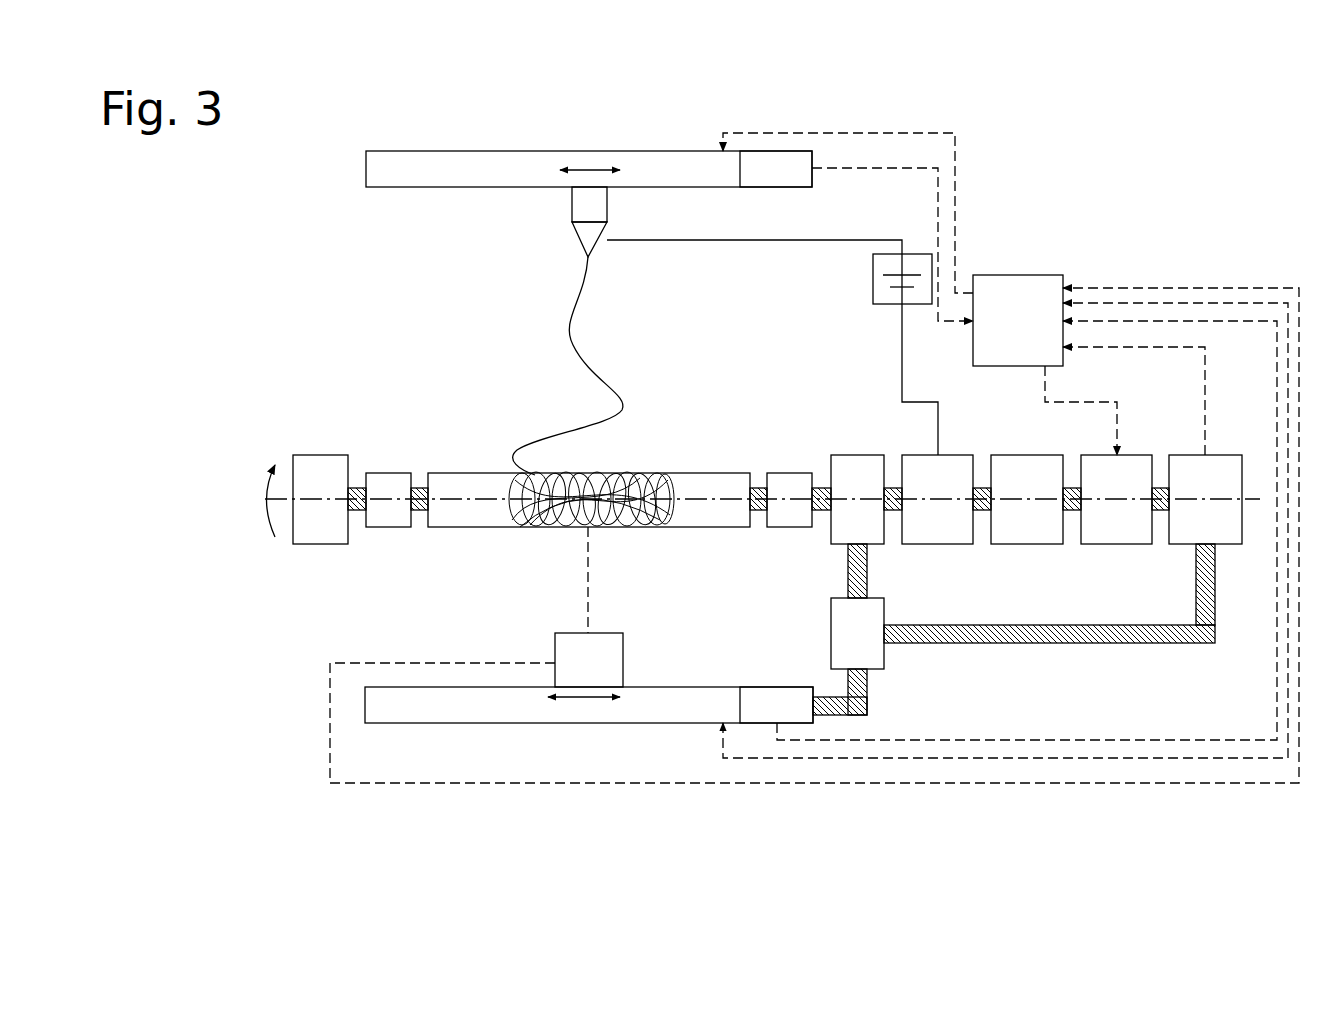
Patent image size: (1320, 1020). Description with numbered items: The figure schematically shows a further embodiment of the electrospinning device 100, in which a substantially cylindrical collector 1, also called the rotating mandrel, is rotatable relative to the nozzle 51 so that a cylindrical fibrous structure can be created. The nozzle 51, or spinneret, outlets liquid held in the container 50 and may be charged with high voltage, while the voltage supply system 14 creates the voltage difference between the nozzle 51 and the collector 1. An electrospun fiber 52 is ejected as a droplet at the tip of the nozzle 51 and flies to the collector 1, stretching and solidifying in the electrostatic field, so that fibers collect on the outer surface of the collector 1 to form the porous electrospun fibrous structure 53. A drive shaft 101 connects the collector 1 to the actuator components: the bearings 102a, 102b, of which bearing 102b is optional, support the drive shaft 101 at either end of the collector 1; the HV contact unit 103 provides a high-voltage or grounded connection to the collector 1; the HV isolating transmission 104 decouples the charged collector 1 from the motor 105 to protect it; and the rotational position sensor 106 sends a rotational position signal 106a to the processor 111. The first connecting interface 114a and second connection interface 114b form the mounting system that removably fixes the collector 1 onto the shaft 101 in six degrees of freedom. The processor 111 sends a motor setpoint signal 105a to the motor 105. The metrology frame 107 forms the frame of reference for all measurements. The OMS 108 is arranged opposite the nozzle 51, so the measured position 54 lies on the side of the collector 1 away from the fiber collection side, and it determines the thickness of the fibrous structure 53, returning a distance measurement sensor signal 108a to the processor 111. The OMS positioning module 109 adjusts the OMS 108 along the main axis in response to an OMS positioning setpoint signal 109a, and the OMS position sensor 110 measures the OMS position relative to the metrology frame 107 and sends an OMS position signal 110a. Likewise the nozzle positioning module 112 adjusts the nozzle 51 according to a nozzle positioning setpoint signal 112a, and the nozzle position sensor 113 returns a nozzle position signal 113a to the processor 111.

The collector 1 is at (690, 480).
The voltage supply system 14 is at (880, 293).
The container 50 is at (580, 198).
The nozzle 51 is at (585, 230).
The electrospun fiber 52 is at (570, 340).
The electrospun fibrous structure 53 is at (522, 515).
The measured position 54 is at (595, 522).
The electrospinning device 100 is at (1062, 236).
The drive shaft 101 is at (820, 512).
The bearing 102a is at (848, 455).
The bearing 102b is at (305, 465).
The HV contact unit 103 is at (946, 532).
The HV isolating transmission 104 is at (1025, 532).
The motor 105 is at (1128, 462).
The rotational position sensor 106 is at (1180, 535).
The metrology frame 107 is at (870, 661).
The OMS 108 is at (615, 680).
The OMS positioning module 109 is at (393, 712).
The OMS position sensor 110 is at (798, 695).
The processor 111 is at (985, 350).
The nozzle positioning module 112 is at (697, 158).
The nozzle position sensor 113 is at (750, 178).
The first connecting interface 114a is at (782, 480).
The second connection interface 114b is at (392, 515).
The motor setpoint signal 105a is at (1040, 380).
The rotational position signal 106a is at (1110, 350).
The distance measurement sensor signal 108a is at (418, 660).
The OMS positioning setpoint signal 109a is at (722, 735).
The OMS position signal 110a is at (1060, 740).
The nozzle positioning setpoint signal 112a is at (958, 220).
The nozzle position signal 113a is at (902, 170).